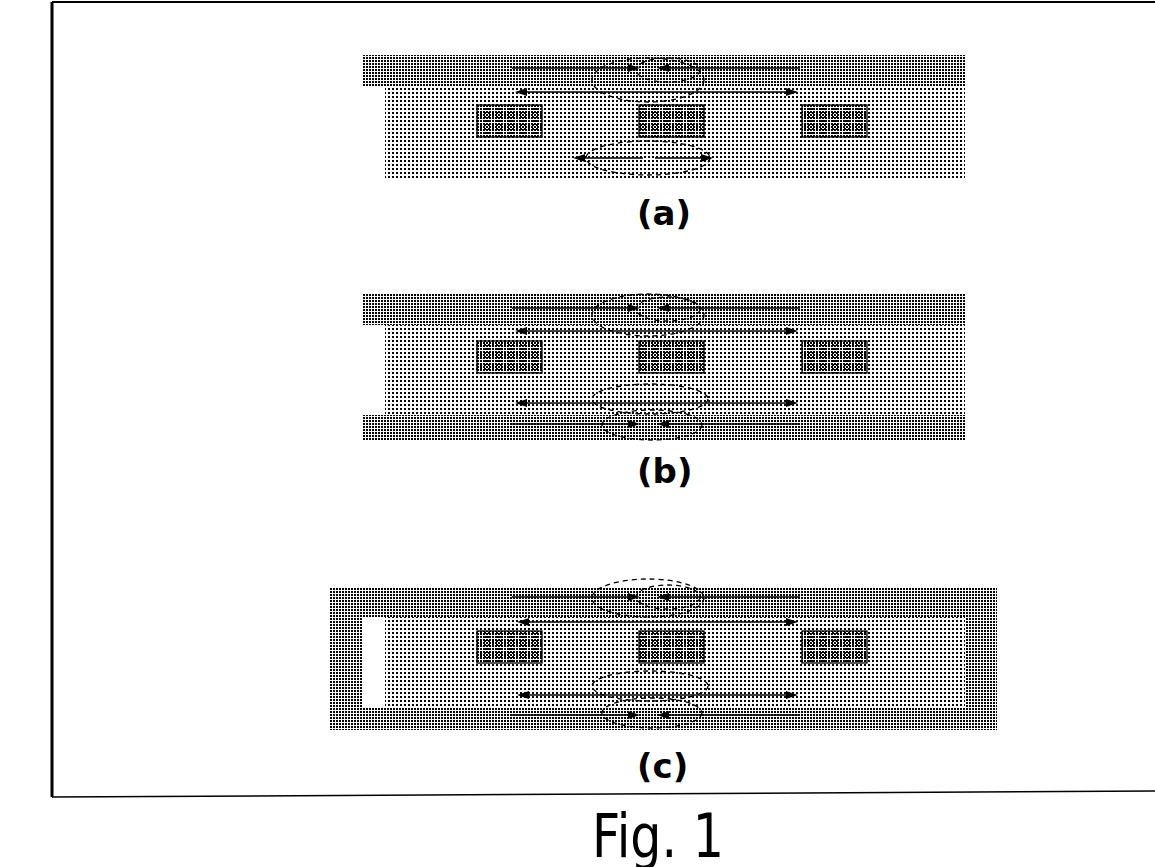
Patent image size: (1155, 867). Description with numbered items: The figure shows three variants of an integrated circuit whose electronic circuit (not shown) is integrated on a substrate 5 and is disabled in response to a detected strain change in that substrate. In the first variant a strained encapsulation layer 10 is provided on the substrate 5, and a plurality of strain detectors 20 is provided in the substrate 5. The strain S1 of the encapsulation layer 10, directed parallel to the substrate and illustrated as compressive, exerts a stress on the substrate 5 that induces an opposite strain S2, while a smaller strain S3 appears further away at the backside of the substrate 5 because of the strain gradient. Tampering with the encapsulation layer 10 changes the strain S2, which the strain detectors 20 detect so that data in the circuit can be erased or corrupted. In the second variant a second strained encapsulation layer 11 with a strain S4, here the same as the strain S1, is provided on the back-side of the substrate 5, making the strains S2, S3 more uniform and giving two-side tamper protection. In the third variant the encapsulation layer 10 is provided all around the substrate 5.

The strained encapsulation layer 10 is at (400, 72).
The second strained encapsulation layer 11 is at (395, 422).
The substrate 5 is at (348, 97).
The strain detectors 20 is at (509, 115).
The strain S1 is at (650, 60).
The strain S2 is at (647, 78).
The strain S3 is at (708, 158).
The strain S4 is at (645, 440).